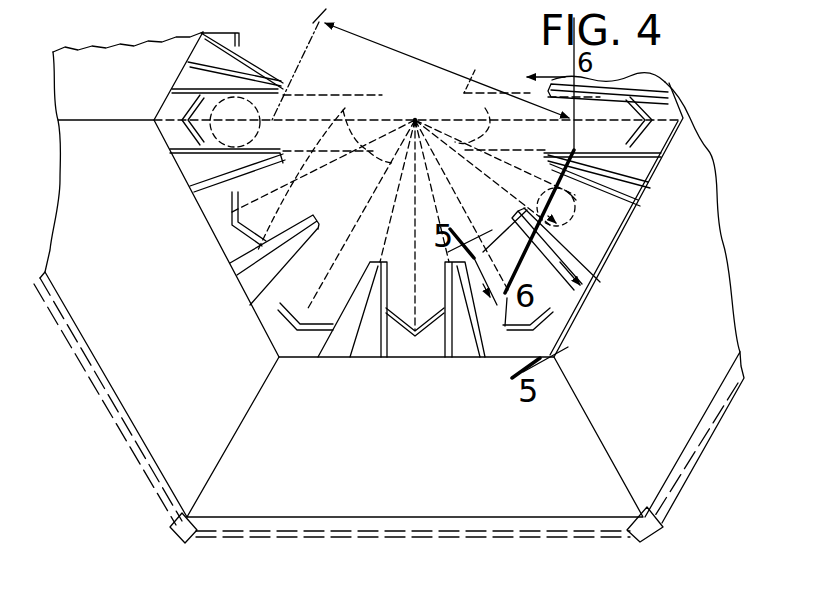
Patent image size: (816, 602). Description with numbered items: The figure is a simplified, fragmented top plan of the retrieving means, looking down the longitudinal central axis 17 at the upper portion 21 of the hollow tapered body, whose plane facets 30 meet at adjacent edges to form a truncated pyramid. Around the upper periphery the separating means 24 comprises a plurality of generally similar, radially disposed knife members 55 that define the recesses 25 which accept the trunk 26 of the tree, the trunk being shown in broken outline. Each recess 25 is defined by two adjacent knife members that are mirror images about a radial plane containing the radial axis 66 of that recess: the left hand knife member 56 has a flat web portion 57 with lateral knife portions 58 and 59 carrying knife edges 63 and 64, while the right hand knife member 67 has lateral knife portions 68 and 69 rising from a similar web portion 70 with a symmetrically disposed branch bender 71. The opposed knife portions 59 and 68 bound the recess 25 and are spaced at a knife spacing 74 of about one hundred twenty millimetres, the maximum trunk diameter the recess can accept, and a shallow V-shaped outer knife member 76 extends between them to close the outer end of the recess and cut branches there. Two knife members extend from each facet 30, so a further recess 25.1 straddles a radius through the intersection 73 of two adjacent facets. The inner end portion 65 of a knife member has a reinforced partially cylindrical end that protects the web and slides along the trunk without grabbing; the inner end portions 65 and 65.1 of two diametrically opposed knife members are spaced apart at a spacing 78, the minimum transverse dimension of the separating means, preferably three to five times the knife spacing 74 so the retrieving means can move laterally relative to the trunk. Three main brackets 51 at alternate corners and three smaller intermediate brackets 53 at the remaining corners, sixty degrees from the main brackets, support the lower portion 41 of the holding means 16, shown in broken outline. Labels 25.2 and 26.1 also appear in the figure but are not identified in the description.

The spacing 78 is at (398, 36).
The inner end portion 65.1 is at (292, 87).
The flow path 25.2 is at (276, 106).
The longitudinal central axis 17 is at (417, 118).
The radial axis 66 is at (338, 106).
The channel 26.1 is at (220, 127).
The recesses 25 is at (293, 204).
The inner end portion 65 is at (546, 157).
The trunk 26 is at (546, 170).
The lateral knife portion 69 is at (581, 150).
The lateral knife portion 68 is at (584, 173).
The web portion 70 is at (599, 170).
The knife members 55 is at (427, 293).
The right hand knife member 67 is at (617, 192).
The left hand knife member 56 is at (549, 316).
The branch bender 71 is at (592, 180).
The lateral knife portion 59 is at (486, 207).
The knife edge 64 is at (526, 202).
The outer knife member 76 is at (586, 242).
The knife spacing 74 is at (577, 236).
The web portion 57 is at (573, 304).
The lateral knife portion 58 is at (606, 363).
The knife edge 63 is at (548, 354).
The facets 30 is at (114, 259).
The upper portion 21 is at (227, 343).
The separating means 24 is at (250, 312).
The recess 25.1 is at (505, 360).
The intersection 73 is at (581, 415).
The intermediate brackets 53 is at (193, 538).
The holding means 16 is at (413, 552).
The lower portion 41 is at (386, 538).
The main brackets 51 is at (644, 532).